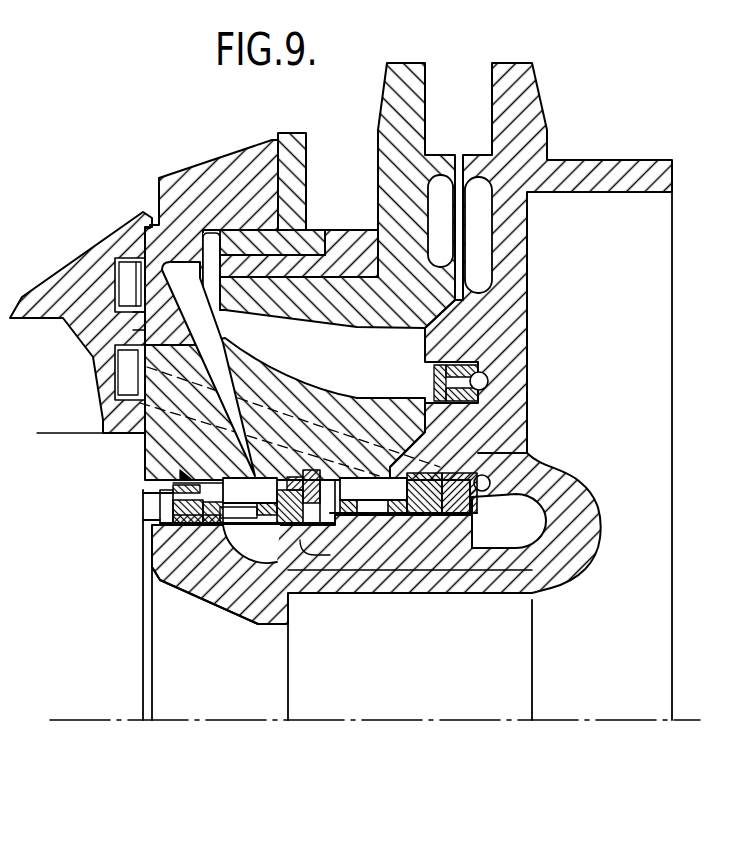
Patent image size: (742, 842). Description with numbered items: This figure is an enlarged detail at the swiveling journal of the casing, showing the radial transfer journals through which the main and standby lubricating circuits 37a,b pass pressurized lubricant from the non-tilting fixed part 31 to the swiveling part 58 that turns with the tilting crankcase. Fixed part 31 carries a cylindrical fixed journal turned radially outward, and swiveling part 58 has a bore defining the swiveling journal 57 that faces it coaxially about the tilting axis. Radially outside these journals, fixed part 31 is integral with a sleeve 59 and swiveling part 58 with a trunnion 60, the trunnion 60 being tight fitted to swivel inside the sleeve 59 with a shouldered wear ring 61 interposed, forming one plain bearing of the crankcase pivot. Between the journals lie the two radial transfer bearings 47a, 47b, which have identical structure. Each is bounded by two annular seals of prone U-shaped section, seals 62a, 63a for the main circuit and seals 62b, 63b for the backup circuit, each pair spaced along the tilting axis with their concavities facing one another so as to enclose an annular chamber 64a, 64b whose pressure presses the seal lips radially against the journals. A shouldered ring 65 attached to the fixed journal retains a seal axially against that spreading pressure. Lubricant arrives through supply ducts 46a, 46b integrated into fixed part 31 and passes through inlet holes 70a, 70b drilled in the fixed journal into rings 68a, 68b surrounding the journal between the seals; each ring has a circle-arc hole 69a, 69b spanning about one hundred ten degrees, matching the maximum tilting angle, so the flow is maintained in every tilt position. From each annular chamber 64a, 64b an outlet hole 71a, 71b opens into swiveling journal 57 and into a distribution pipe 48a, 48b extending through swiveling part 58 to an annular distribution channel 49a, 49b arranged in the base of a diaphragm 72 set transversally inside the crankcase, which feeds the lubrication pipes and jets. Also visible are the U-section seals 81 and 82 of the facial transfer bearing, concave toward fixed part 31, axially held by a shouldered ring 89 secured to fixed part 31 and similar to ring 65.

The fixed part 31 is at (577, 180).
The main and standby lubricating circuits 37a,b is at (540, 527).
The supply duct 46a is at (272, 560).
The supply duct 46b is at (405, 560).
The transfer bearing 47a is at (190, 470).
The transfer bearing 47b is at (527, 457).
The distribution pipe 48a is at (150, 346).
The distribution pipe 48b is at (170, 382).
The annular distribution channel 49a is at (117, 258).
The annular distribution channel 49b is at (128, 372).
The swiveling journal 57 is at (178, 496).
The swiveling part 58 is at (225, 175).
The sleeve 59 is at (402, 140).
The trunnion 60 is at (290, 203).
The shouldered wear ring 61 is at (370, 242).
The seal 62a is at (163, 511).
The seal 62b is at (332, 520).
The seal 63a is at (263, 490).
The seal 63b is at (425, 495).
The annular chamber 64a is at (273, 556).
The annular chamber 64b is at (435, 452).
The shouldered ring 65 is at (172, 525).
The ring 68a is at (210, 531).
The ring 68b is at (352, 515).
The hole 69a is at (200, 553).
The hole 69b is at (372, 528).
The hole 70a is at (215, 560).
The hole 70b is at (430, 540).
The outlet hole 71a is at (185, 478).
The outlet hole 71b is at (435, 438).
The diaphragm 72 is at (55, 287).
The seal 81 is at (480, 513).
The seal 82 is at (445, 392).
The shouldered ring 89 is at (450, 365).